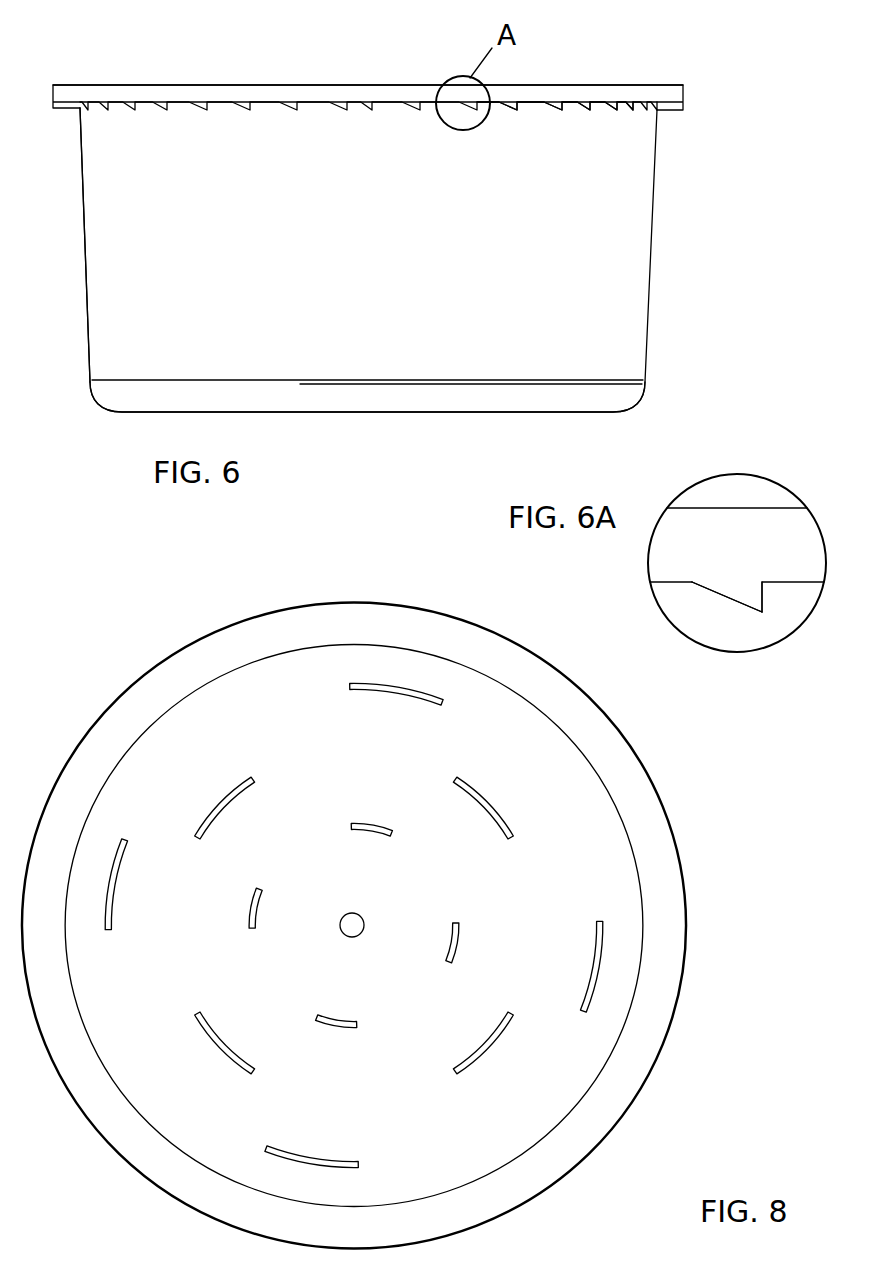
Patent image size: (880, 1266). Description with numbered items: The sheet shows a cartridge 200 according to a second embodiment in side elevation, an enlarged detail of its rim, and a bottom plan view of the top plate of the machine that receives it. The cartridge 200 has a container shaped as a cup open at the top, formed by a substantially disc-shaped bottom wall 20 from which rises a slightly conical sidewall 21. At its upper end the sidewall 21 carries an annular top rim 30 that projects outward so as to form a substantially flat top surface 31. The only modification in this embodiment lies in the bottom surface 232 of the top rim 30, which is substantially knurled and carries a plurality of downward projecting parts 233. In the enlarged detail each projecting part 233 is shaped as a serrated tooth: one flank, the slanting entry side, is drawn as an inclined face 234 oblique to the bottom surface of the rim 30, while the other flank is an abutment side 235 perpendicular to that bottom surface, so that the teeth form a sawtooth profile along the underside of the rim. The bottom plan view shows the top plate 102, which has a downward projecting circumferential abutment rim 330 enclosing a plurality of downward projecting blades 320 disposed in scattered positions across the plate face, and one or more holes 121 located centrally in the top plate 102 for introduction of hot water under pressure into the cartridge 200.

In FIG. 6, the bottom wall 20 is at (437, 424).
In FIG. 6, the sidewall 21 is at (133, 253).
In FIG. 6, the top rim 30 is at (67, 95).
In FIG. 6A, the top rim 30 is at (797, 547).
In FIG. 6, the top surface 31 is at (100, 84).
In FIG. 6, the cartridge 200 is at (684, 294).
In FIG. 6, the bottom surface of the top rim 232 is at (590, 135).
In FIG. 6, the projecting part 233 is at (417, 107).
In FIG. 6A, the projecting part 233 is at (730, 582).
In FIG. 6A, the inclined tooth face 234 is at (727, 602).
In FIG. 6A, the abutment side 235 is at (768, 602).
In FIG. 8, the top plate 102 is at (232, 697).
In FIG. 8, the hole 121 is at (360, 920).
In FIG. 8, the slots 320 is at (117, 865).
In FIG. 8, the circumferential abutment rim 330 is at (665, 972).